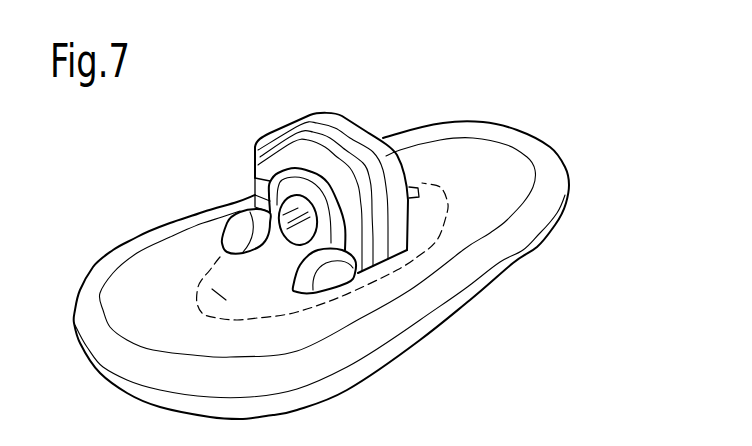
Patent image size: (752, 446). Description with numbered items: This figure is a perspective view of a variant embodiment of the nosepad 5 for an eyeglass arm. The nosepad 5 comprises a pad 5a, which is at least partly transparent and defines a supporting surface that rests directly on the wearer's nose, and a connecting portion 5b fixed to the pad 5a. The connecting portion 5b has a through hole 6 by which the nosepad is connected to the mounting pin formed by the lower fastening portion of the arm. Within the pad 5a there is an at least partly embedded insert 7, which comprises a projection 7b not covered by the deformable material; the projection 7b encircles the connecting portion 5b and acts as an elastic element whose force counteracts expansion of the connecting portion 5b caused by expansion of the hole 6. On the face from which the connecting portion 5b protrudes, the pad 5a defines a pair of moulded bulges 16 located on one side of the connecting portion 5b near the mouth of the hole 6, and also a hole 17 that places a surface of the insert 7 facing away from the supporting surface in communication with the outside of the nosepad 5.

The nosepad 5 is at (512, 287).
The pad 5a is at (498, 173).
The connecting portion 5b is at (288, 192).
The through hole 6 is at (271, 206).
The insert 7 is at (203, 278).
The projection 7b is at (345, 131).
The bulges 16 is at (233, 233).
The hole 17 is at (412, 186).